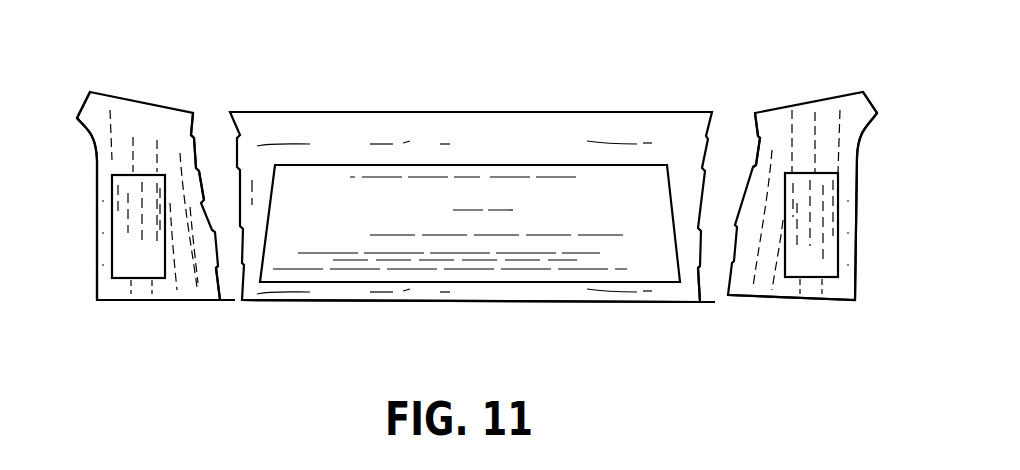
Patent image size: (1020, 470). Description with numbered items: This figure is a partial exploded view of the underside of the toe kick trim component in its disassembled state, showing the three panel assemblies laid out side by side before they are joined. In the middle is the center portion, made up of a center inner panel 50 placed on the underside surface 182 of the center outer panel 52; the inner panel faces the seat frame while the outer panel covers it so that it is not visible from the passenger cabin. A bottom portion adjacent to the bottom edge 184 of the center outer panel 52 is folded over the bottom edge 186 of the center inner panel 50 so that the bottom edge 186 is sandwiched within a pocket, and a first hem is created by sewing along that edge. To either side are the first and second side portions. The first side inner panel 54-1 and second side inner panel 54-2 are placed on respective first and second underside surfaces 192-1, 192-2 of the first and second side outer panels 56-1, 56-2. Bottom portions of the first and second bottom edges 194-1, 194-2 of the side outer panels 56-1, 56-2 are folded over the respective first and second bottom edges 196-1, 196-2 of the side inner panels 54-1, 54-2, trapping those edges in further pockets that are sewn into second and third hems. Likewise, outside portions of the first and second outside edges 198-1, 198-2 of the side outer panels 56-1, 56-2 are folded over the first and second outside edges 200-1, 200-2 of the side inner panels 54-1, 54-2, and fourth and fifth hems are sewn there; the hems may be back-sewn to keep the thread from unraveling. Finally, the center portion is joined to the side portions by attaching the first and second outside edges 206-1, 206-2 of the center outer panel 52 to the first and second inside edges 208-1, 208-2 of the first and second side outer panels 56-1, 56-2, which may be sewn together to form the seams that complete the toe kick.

The center inner panel 50 is at (323, 190).
The center outer panel 52 is at (542, 127).
The first side inner panel 54-1 is at (132, 253).
The second side inner panel 54-2 is at (830, 247).
The first side outer panel 56-1 is at (102, 252).
The second side outer panel 56-2 is at (850, 237).
The underside surface 182 is at (497, 141).
The bottom edge 184 is at (633, 303).
The bottom edge 186 is at (550, 285).
The first underside surface 192-1 is at (165, 133).
The second underside surface 192-2 is at (836, 131).
The first bottom edge 194-1 is at (200, 300).
The second bottom edge 194-2 is at (760, 300).
The first bottom edge 196-1 is at (143, 280).
The second bottom edge 196-2 is at (832, 277).
The first outside edge 198-1 is at (97, 200).
The second outside edge 198-2 is at (857, 167).
The first outside edge 200-1 is at (110, 225).
The second outside edge 200-2 is at (838, 217).
The first outside edge 206-1 is at (232, 146).
The second outside edge 206-2 is at (708, 134).
The first inside edge 208-1 is at (228, 300).
The second inside edge 208-2 is at (723, 293).